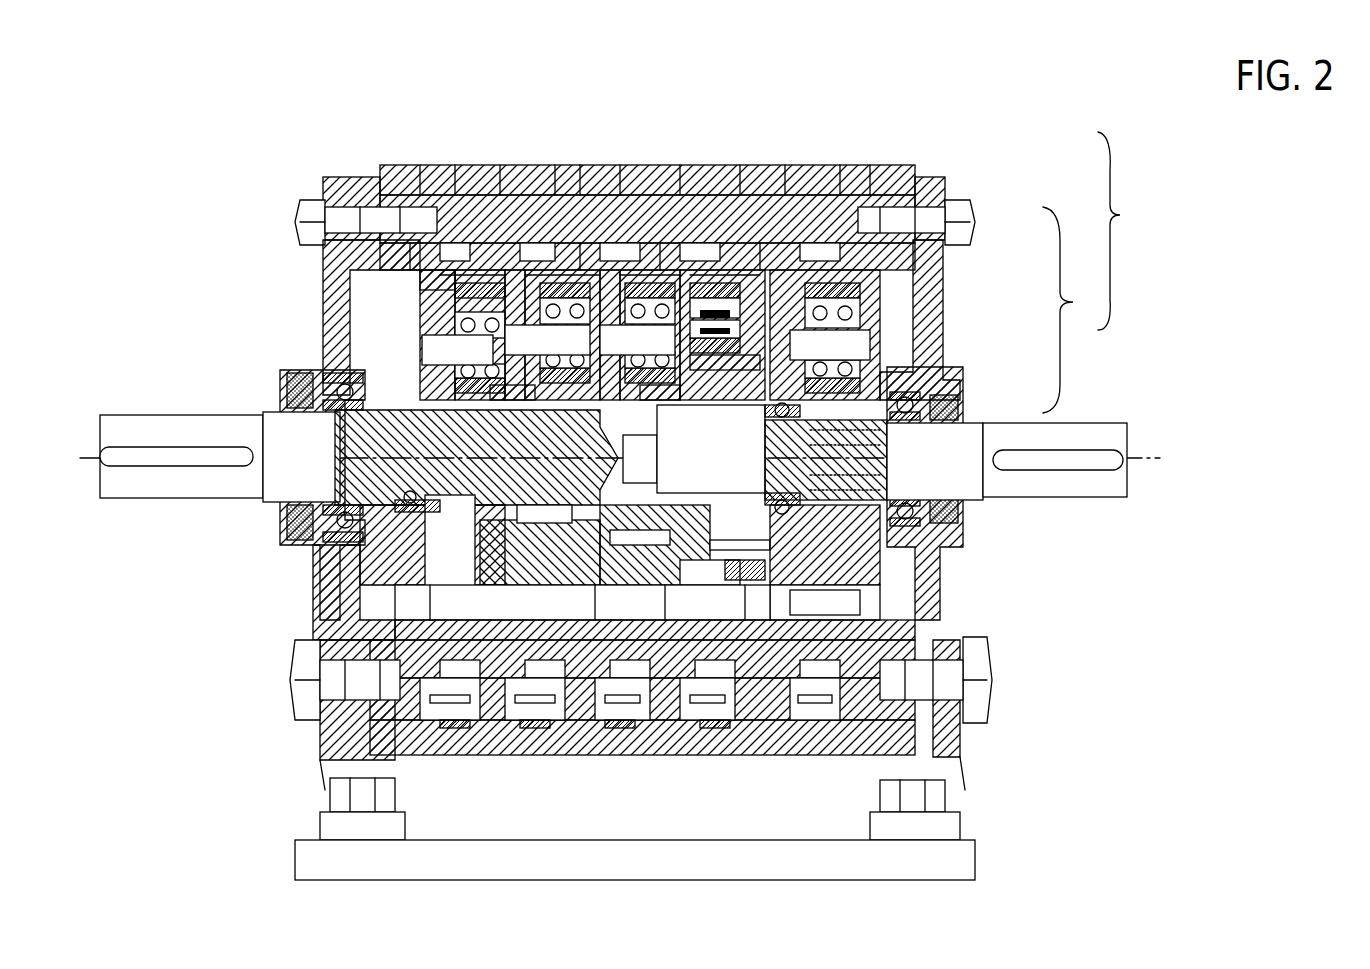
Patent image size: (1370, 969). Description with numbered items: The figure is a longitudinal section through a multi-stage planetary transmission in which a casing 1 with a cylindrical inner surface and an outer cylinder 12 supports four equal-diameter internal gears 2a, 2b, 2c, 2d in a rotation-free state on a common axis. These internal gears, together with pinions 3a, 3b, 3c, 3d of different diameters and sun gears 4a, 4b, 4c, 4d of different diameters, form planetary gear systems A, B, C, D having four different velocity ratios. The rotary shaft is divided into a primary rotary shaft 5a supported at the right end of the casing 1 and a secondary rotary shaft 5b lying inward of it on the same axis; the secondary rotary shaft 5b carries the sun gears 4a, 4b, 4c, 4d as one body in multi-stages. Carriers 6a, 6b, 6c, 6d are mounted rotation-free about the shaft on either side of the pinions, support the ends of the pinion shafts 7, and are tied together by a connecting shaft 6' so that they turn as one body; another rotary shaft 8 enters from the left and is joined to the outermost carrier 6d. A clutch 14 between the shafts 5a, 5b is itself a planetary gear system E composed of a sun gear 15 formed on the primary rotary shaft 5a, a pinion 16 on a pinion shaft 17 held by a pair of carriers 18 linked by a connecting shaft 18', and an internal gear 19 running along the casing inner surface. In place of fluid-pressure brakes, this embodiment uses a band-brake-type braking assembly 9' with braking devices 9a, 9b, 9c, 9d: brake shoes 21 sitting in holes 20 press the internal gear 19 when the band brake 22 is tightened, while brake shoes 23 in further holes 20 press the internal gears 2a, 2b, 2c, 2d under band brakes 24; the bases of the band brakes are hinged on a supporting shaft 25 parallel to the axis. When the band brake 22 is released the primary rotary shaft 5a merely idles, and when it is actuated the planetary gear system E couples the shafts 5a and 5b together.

The casing 1 is at (340, 262).
The internal gear 2a is at (740, 230).
The internal gear 2b is at (610, 270).
The internal gear 2c is at (515, 270).
The internal gear 2d is at (440, 270).
The pinion 3a is at (715, 280).
The pinion 3b is at (650, 280).
The pinion 3c is at (553, 280).
The pinion 3d is at (462, 270).
The sun gear 4a is at (700, 570).
The sun gear 4b is at (615, 540).
The sun gear 4c is at (540, 510).
The sun gear 4d is at (453, 495).
The primary rotary shaft 5a is at (1100, 425).
The secondary rotary shaft 5b is at (345, 420).
The carrier 6a is at (712, 300).
The carrier 6b is at (630, 300).
The carrier 6c is at (505, 300).
The carrier 6d is at (430, 290).
The connecting shaft 6' is at (326, 592).
The pinion shaft 7 is at (440, 352).
The rotary shaft 8 is at (180, 415).
The braking device 9a is at (698, 773).
The braking device 9b is at (617, 773).
The braking device 9c is at (533, 773).
The braking device 9d is at (453, 773).
The braking assembly 9' is at (718, 166).
The outer cylinder 12 is at (385, 167).
The clutch 14 is at (1132, 231).
The sun gear 15 is at (880, 460).
The pinion 16 is at (865, 310).
The pinion shaft 17 is at (850, 348).
The carrier 18 is at (906, 329).
The connecting shaft 18' is at (895, 562).
The internal gear 19 is at (870, 258).
The hole 20 is at (880, 700).
The brake shoe 21 is at (840, 715).
The band brake 22 is at (810, 740).
The brake shoe 23 is at (480, 720).
The band brake 24 is at (565, 735).
The supporting shaft 25 is at (780, 215).
The planetary gear system A is at (714, 97).
The planetary gear system B is at (636, 97).
The planetary gear system C is at (549, 97).
The planetary gear system D is at (466, 97).
The planetary gear system E is at (1071, 310).